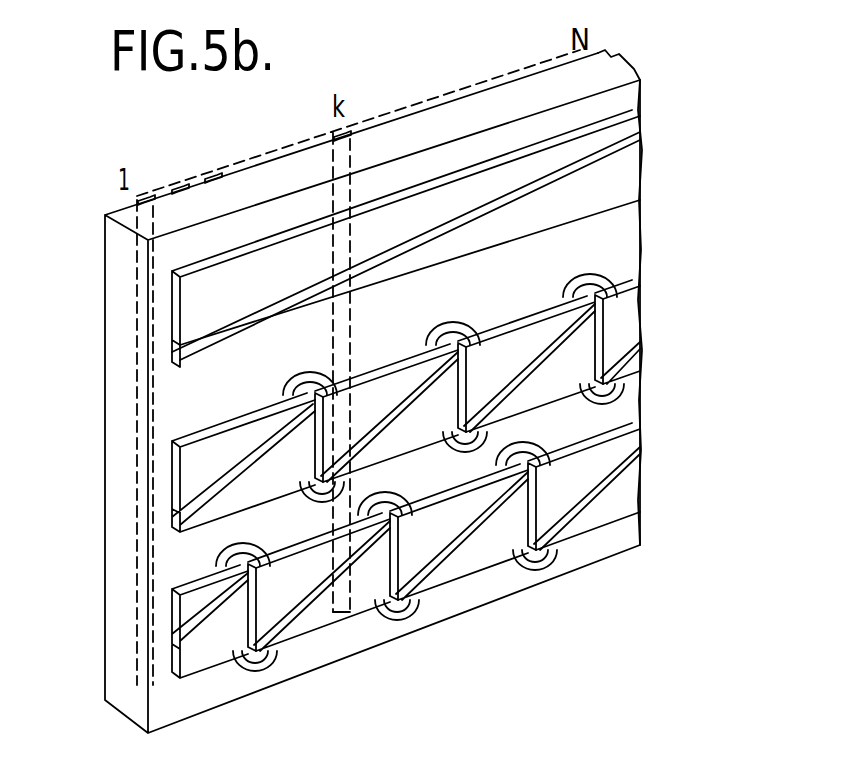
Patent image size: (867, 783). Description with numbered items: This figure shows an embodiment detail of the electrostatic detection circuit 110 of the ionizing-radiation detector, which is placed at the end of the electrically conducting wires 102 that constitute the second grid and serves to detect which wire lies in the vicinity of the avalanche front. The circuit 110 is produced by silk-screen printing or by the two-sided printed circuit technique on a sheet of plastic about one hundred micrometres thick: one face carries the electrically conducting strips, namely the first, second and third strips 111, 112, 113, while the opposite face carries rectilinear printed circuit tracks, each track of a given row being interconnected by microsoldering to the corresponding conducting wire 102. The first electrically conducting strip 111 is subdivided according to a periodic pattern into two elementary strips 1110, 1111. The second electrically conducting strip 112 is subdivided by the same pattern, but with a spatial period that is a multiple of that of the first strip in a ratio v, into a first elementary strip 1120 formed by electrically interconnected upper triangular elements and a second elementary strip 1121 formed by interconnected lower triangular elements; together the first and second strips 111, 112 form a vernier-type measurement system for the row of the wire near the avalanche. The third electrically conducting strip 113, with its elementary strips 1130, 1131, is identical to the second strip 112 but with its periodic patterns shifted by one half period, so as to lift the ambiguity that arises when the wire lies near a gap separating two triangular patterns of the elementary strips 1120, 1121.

The electrically conducting wires 102 is at (150, 196).
The electrostatic detection circuit 110 is at (118, 402).
The first electrically conducting strip 111 is at (386, 238).
The first elementary strip of the first strip 1110 is at (583, 150).
The second elementary strip of the first strip 1111 is at (608, 185).
The second electrically conducting strip 112 is at (381, 389).
The first elementary strip of the second strip 1120 is at (543, 333).
The second elementary strip of the second strip 1121 is at (562, 368).
The third electrically conducting strip 113 is at (382, 549).
The first elementary strip of the third strip 1130 is at (587, 462).
The second elementary strip of the third strip 1131 is at (625, 495).